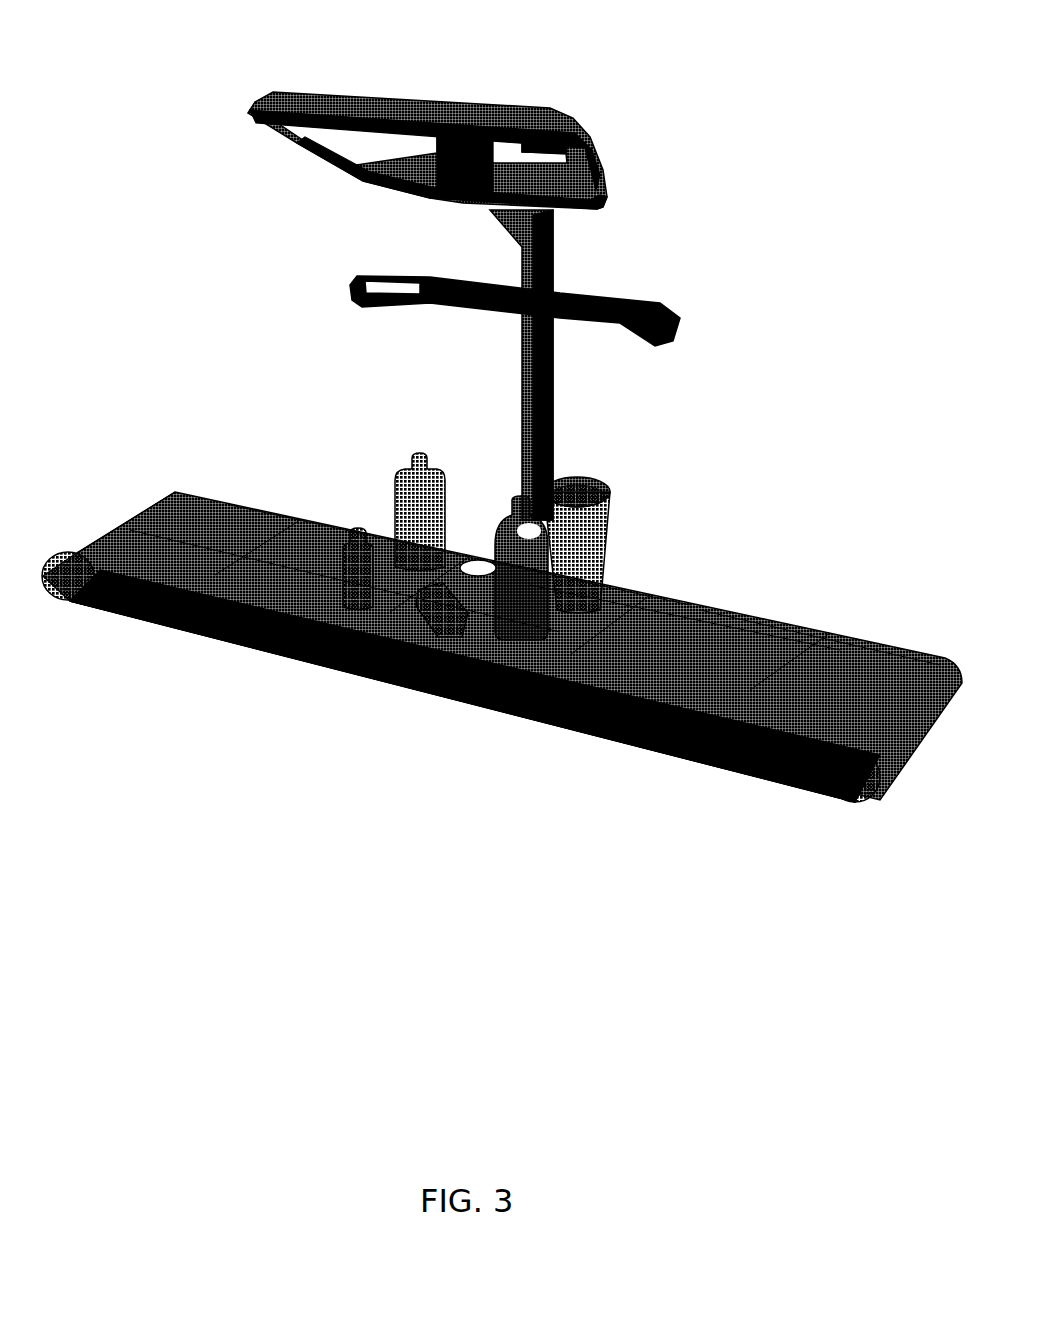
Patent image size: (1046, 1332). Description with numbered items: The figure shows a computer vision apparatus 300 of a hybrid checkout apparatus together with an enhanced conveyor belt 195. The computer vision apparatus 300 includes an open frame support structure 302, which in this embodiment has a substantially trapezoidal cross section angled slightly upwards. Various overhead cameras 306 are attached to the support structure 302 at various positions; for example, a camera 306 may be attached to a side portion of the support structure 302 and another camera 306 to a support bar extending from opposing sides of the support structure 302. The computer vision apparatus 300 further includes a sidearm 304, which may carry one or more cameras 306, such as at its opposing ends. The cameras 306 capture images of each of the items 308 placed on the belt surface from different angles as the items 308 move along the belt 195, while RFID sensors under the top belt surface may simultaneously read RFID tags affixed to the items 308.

The computer vision apparatus 300 is at (742, 55).
The open frame support structure 302 is at (353, 104).
The sidearm 304 is at (452, 272).
The cameras 306 is at (527, 287).
The items 308 is at (618, 487).
The belt 195 is at (858, 639).